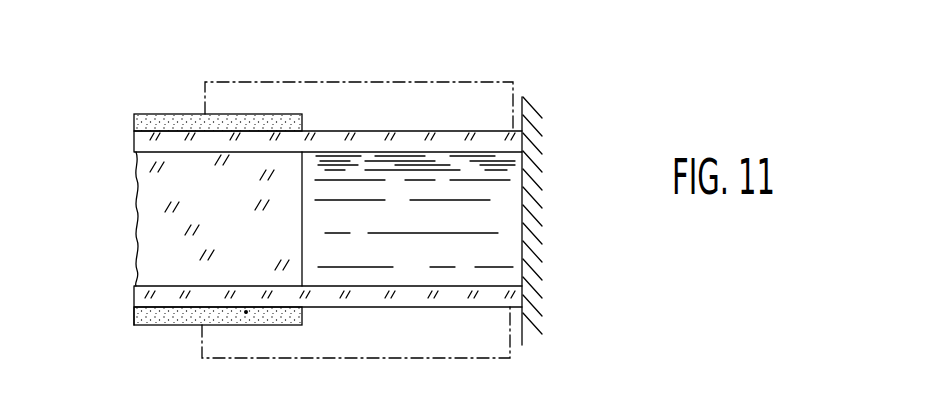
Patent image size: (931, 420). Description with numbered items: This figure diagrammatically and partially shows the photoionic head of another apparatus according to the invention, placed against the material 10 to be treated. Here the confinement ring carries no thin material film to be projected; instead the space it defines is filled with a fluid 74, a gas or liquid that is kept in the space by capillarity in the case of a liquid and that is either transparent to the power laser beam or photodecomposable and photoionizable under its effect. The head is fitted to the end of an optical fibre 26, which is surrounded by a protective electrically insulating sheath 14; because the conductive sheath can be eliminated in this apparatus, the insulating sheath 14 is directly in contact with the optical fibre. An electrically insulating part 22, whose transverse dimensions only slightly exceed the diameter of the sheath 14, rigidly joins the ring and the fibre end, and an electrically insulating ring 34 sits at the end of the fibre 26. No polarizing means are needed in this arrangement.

The material 10 is at (535, 146).
The electrically insulating sheath 14 is at (170, 122).
The electrically insulating part 22 is at (428, 82).
The optical fibre 26 is at (122, 165).
The electrically insulating ring 34 is at (497, 300).
The fluid 74 is at (495, 216).